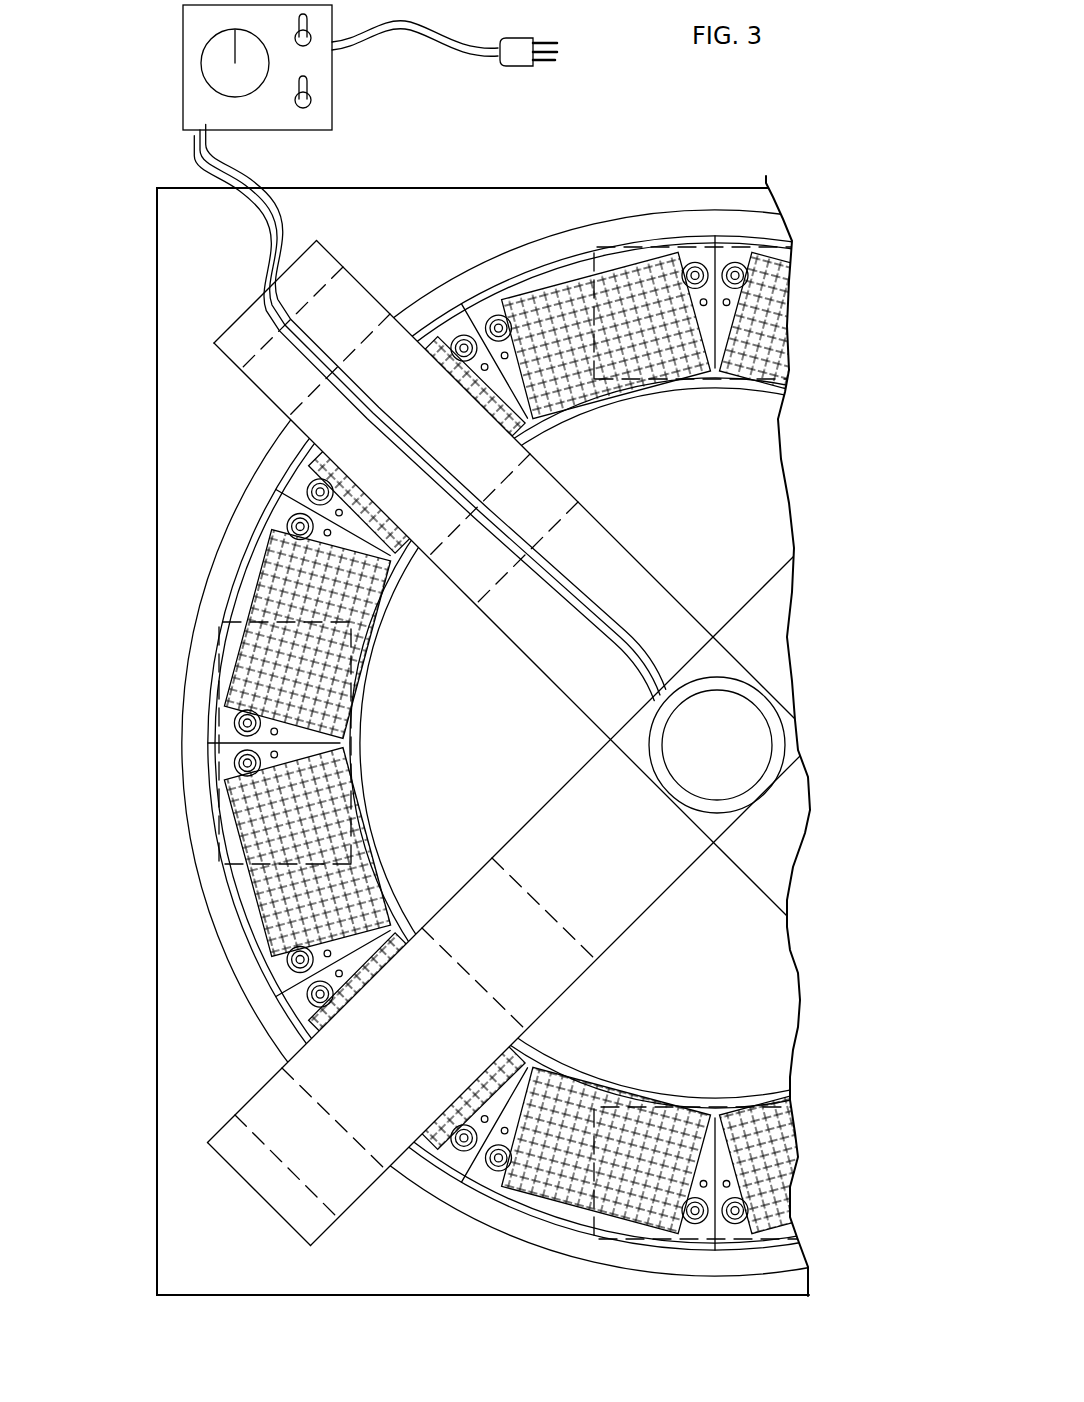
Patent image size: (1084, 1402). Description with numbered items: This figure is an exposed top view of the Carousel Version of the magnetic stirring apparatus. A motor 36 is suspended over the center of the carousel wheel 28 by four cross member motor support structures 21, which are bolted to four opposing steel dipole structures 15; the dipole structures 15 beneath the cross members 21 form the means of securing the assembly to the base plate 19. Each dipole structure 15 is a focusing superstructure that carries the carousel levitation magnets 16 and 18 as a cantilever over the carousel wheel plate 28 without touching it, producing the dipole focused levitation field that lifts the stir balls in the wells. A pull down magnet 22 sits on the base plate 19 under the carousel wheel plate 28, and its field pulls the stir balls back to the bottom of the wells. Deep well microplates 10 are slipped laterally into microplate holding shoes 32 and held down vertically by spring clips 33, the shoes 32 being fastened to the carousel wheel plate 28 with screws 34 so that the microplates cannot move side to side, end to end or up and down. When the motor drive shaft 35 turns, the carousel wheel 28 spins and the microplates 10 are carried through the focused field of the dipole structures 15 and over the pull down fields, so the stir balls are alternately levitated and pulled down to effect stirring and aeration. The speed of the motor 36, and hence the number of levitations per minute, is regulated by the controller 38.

The deep well microplate 10 is at (247, 597).
The dipole structure 15 is at (236, 310).
The carousel levitation magnet 16 is at (360, 295).
The carousel levitation magnet 18 is at (567, 477).
The base plate 19 is at (150, 402).
The cross member motor support structure 21 is at (633, 558).
The pull down magnet 22 is at (705, 248).
The carousel wheel plate 28 is at (208, 578).
The microplate holding shoe 32 is at (288, 520).
The spring clip 33 is at (308, 484).
The screw 34 is at (392, 557).
The motor drive shaft 35 is at (735, 745).
The motor 36 is at (648, 737).
The controller 38 is at (183, 40).